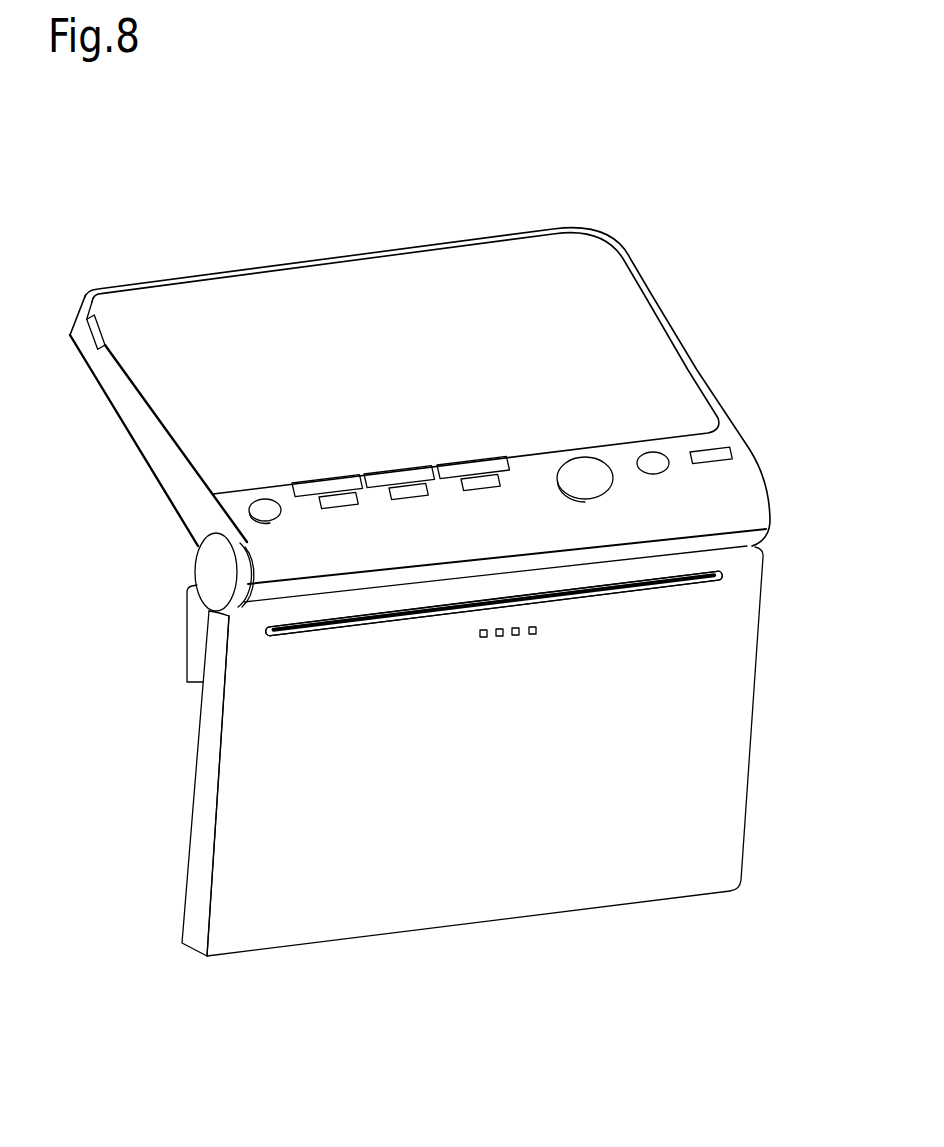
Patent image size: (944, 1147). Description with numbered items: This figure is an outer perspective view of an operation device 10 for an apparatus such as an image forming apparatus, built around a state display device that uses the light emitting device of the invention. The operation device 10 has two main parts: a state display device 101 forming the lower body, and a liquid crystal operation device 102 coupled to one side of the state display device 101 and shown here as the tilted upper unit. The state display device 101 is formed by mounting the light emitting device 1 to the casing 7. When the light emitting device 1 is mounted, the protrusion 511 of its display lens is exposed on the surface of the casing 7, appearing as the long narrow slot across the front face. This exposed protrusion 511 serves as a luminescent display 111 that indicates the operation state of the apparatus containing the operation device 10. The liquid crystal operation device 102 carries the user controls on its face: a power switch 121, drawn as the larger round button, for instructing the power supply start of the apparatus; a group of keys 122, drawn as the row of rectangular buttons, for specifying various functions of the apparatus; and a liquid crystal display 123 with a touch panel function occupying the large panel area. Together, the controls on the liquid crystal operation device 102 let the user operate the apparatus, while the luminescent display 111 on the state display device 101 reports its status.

The operation device 10 is at (75, 253).
The liquid crystal operation device 102 is at (670, 328).
The state display device 101 is at (747, 647).
The liquid crystal display 123 is at (161, 365).
The group of keys 122 is at (317, 523).
The power switch 121 is at (598, 483).
The luminescent display 111 is at (590, 593).
The protrusion 511 is at (494, 621).
The light emitting device 1 is at (197, 618).
The casing 7 is at (338, 705).